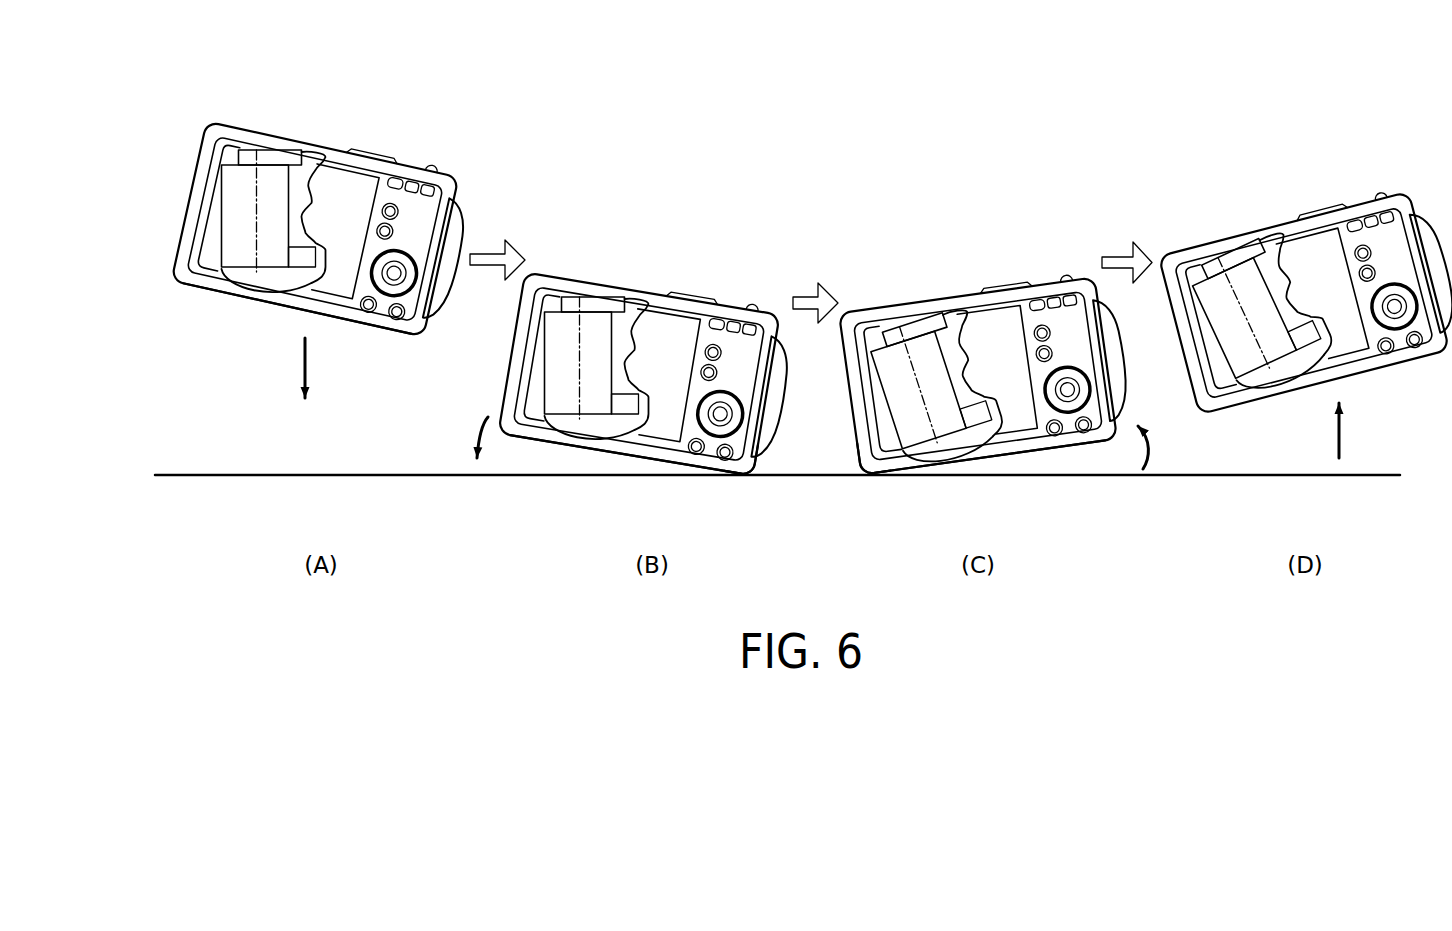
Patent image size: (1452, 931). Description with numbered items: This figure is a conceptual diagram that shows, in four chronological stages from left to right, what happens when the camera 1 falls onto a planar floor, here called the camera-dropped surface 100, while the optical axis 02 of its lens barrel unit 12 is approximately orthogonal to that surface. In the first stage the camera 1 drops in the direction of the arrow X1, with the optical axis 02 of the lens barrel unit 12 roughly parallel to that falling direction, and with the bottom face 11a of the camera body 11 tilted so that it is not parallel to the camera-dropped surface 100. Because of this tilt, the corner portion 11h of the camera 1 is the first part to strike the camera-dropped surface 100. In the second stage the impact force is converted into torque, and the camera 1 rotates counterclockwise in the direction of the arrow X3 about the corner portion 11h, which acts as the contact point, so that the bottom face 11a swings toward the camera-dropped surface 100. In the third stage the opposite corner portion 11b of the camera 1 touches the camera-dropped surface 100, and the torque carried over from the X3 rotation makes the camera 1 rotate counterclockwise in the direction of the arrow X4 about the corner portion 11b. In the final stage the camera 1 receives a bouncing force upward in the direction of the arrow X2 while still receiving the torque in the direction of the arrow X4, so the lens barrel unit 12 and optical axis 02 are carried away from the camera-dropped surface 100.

The camera 1 is at (346, 125).
The camera body housing 11 is at (450, 176).
The bottom face 11a is at (224, 298).
The corner portion 11h is at (746, 479).
The corner portion 11b is at (870, 478).
The lens barrel unit 12 is at (271, 150).
The optical axis 02 is at (251, 173).
The camera-dropped surface 100 is at (181, 472).
The falling direction arrow X1 is at (312, 366).
The bouncing force direction arrow X2 is at (1342, 432).
The rotation direction arrow X3 is at (472, 438).
The rotation direction arrow X4 is at (1155, 448).